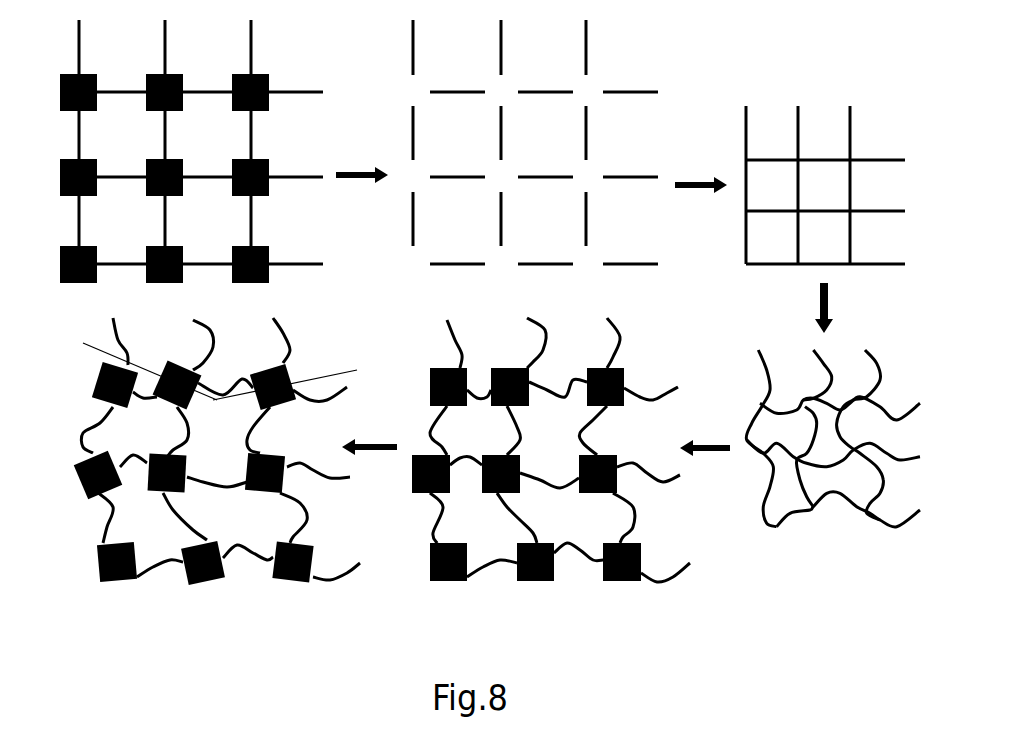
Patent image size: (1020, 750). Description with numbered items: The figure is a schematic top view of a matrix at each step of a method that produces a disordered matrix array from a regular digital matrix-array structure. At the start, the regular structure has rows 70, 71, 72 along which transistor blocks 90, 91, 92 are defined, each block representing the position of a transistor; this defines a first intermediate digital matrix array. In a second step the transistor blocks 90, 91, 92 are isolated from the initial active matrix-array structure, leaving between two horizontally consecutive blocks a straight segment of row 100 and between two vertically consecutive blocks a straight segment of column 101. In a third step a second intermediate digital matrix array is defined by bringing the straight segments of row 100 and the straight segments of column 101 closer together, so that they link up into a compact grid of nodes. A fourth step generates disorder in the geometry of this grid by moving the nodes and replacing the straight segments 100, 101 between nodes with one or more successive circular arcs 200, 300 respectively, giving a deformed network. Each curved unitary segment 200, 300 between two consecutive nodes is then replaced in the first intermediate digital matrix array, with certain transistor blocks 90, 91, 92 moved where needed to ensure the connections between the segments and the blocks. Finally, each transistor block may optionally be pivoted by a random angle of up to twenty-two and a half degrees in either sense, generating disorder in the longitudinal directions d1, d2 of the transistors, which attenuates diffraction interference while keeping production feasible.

The row 70 is at (135, 64).
The row 71 is at (135, 149).
The row 72 is at (135, 234).
The transistor block 90 is at (66, 74).
The transistor block 91 is at (60, 162).
The transistor block 92 is at (60, 262).
The straight segment of row 100 is at (545, 92).
The straight segment of column 101 is at (502, 118).
The circular arc 200 is at (848, 400).
The circular arc 300 is at (812, 422).
The longitudinal direction d1 is at (140, 365).
The longitudinal direction d2 is at (318, 377).